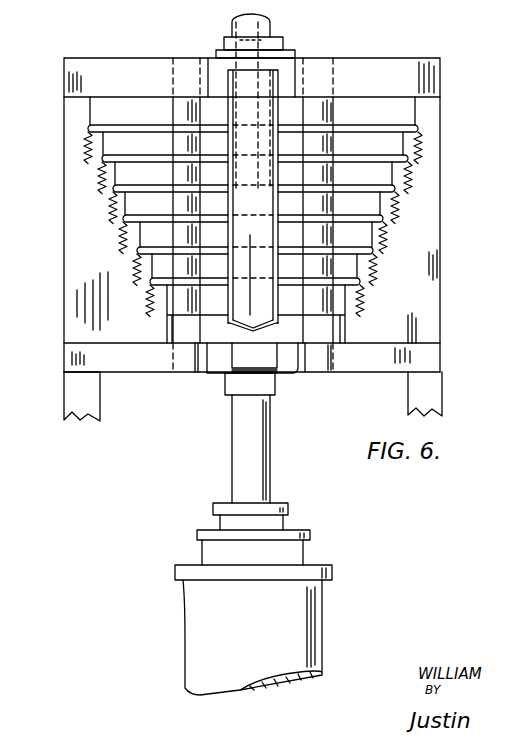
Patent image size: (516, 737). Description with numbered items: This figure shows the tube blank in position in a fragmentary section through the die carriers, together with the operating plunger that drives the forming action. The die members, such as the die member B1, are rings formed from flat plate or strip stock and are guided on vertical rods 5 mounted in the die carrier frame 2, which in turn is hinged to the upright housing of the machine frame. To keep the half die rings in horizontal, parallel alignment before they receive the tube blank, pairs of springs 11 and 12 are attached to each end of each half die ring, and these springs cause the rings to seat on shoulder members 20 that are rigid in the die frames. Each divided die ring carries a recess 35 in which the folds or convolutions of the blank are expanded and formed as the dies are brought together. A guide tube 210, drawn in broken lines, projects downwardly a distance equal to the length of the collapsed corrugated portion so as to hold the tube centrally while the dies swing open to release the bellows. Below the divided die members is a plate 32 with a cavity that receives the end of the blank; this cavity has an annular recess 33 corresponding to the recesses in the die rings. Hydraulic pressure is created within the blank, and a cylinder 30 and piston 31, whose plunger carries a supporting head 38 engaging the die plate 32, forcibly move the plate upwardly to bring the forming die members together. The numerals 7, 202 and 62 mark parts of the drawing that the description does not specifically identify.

The die carrier frame 2 is at (64, 77).
The vertical rod 5 is at (174, 112).
The spring 11 is at (103, 198).
The spring 12 is at (398, 193).
The shoulder member 20 is at (418, 142).
The recess 35 is at (293, 118).
The die member B1 is at (253, 121).
The central tube 7 is at (248, 225).
The plate 32 is at (261, 332).
The guide tube 210 is at (272, 33).
The flange 202 is at (285, 43).
The supporting head 38 is at (213, 371).
The annular recess 33 is at (357, 363).
The piston 31 is at (267, 437).
The cylinder 30 is at (253, 599).
The wall hatching 62 is at (257, 295).